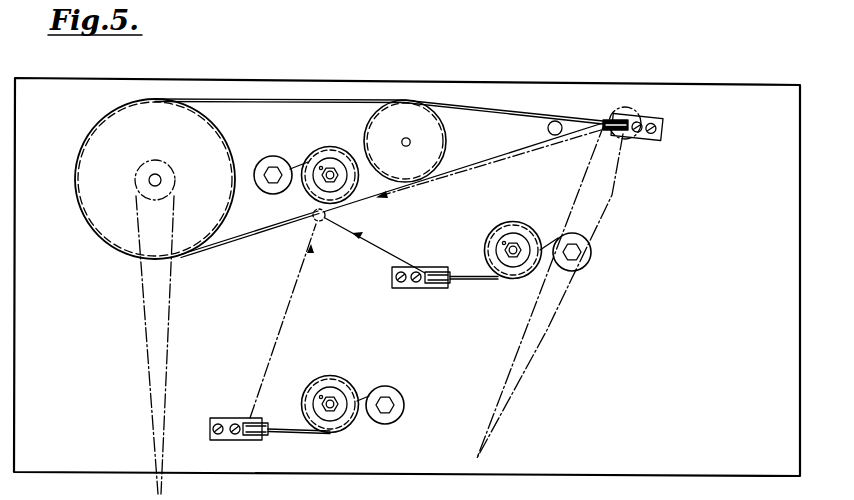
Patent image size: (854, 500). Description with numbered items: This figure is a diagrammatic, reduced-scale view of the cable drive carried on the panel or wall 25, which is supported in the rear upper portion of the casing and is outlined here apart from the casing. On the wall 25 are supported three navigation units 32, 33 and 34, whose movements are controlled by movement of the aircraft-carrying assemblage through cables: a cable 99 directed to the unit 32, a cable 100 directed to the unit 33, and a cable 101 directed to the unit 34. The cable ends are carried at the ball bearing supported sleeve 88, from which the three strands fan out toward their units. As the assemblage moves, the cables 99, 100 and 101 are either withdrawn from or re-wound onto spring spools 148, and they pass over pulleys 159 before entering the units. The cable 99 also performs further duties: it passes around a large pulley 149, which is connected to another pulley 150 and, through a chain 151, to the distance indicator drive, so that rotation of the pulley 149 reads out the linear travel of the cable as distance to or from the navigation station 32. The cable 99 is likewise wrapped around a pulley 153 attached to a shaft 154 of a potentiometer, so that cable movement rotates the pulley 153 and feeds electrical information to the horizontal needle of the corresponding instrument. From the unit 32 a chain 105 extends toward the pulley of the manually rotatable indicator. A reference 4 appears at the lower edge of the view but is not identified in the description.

The panel or wall 25 is at (87, 88).
The pulley 149 is at (88, 174).
The pulley 150 is at (173, 200).
The chain 151 is at (172, 303).
The reference axis 4 is at (157, 494).
The spring spools 148 is at (311, 159).
The pulley 153 is at (446, 143).
The shaft 154 is at (402, 142).
The cable 99 is at (504, 112).
The navigation unit 32 is at (658, 110).
The pulleys 159 is at (620, 130).
The ball bearing supported sleeve 88 is at (312, 220).
The cable 100 is at (467, 275).
The navigation unit 33 is at (426, 294).
The chain 105 is at (550, 328).
The navigation unit 34 is at (242, 411).
The cable 101 is at (272, 363).